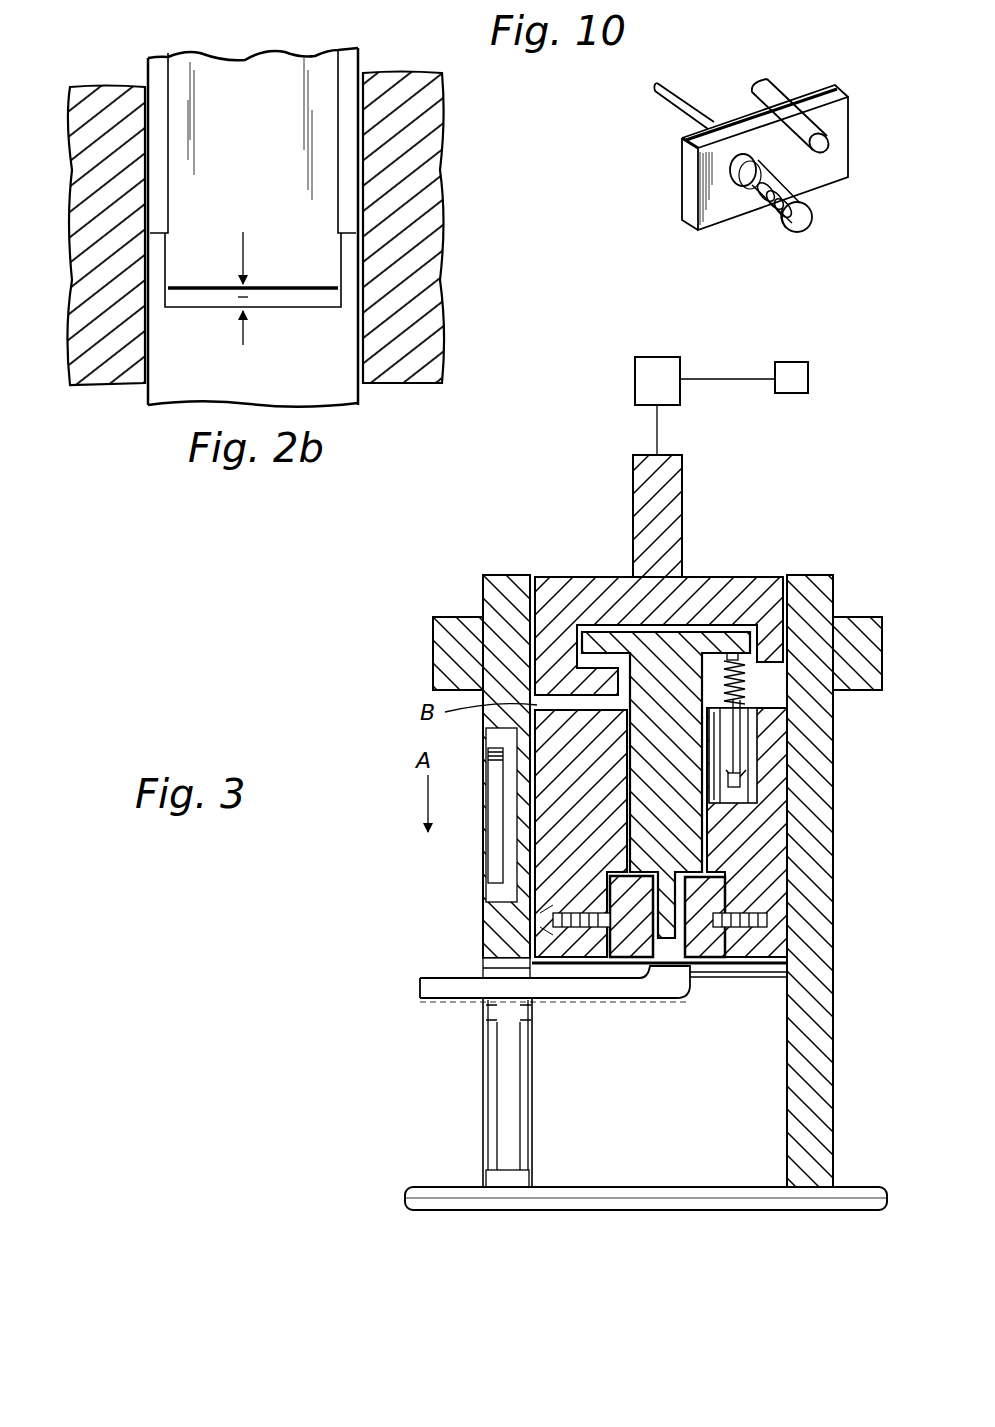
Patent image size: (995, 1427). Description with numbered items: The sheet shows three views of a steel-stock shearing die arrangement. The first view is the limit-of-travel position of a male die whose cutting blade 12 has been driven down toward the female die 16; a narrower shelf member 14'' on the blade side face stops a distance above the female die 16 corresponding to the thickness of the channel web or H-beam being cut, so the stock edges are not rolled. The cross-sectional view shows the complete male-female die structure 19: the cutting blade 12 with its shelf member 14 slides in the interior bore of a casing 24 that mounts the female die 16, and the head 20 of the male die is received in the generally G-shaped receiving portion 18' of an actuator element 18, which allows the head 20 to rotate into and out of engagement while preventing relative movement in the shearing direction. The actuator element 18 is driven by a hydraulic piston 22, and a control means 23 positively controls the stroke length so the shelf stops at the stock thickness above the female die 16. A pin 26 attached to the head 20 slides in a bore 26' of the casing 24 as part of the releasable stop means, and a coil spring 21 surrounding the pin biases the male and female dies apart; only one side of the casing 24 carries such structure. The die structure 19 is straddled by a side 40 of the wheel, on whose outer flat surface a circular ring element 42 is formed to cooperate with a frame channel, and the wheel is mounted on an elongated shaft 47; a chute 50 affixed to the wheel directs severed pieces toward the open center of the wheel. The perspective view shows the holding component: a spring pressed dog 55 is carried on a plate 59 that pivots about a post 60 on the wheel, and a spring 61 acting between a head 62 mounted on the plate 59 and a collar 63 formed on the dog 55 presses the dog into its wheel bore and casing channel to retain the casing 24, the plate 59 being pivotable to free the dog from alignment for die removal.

In FIG. 2b, the cutting blade 12 is at (345, 197).
In FIG. 3, the cutting blade 12 is at (663, 940).
In FIG. 2b, the shelf member 14'' is at (271, 287).
In FIG. 2b, the female die 16 is at (228, 303).
In FIG. 3, the female die 16 is at (713, 898).
In FIG. 10, the spring pressed dog 55 is at (660, 112).
In FIG. 10, the plate 59 is at (803, 173).
In FIG. 10, the post 60 is at (762, 95).
In FIG. 10, the spring 61 is at (765, 210).
In FIG. 10, the head 62 is at (797, 225).
In FIG. 10, the collar 63 is at (731, 168).
In FIG. 3, the actuator element 18 is at (610, 516).
In FIG. 3, the receiving portion 18' is at (659, 620).
In FIG. 3, the head 20 is at (730, 640).
In FIG. 3, the coil spring 21 is at (770, 655).
In FIG. 3, the hydraulic piston 22 is at (672, 397).
In FIG. 3, the control means 23 is at (797, 388).
In FIG. 3, the casing 24 is at (558, 735).
In FIG. 3, the pin 26 is at (804, 755).
In FIG. 3, the bore 26' is at (797, 774).
In FIG. 3, the male-female die structure 19 is at (842, 767).
In FIG. 3, the circular ring element 42 is at (856, 680).
In FIG. 3, the shelf member 14 is at (743, 916).
In FIG. 3, the side 40 is at (483, 1148).
In FIG. 3, the elongated shaft 47 is at (655, 1200).
In FIG. 3, the chute 50 is at (585, 990).